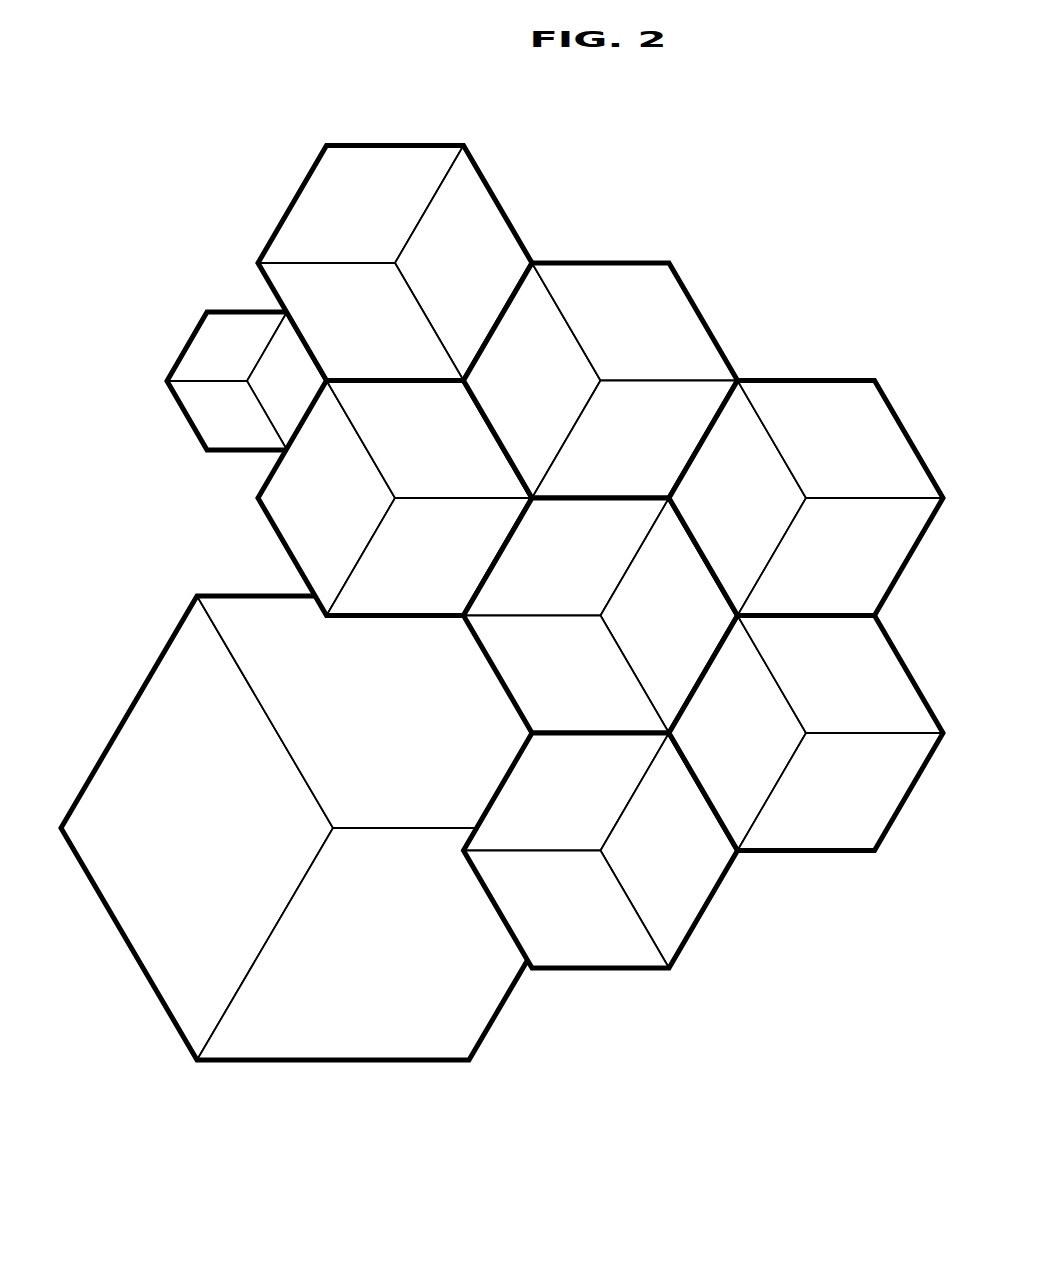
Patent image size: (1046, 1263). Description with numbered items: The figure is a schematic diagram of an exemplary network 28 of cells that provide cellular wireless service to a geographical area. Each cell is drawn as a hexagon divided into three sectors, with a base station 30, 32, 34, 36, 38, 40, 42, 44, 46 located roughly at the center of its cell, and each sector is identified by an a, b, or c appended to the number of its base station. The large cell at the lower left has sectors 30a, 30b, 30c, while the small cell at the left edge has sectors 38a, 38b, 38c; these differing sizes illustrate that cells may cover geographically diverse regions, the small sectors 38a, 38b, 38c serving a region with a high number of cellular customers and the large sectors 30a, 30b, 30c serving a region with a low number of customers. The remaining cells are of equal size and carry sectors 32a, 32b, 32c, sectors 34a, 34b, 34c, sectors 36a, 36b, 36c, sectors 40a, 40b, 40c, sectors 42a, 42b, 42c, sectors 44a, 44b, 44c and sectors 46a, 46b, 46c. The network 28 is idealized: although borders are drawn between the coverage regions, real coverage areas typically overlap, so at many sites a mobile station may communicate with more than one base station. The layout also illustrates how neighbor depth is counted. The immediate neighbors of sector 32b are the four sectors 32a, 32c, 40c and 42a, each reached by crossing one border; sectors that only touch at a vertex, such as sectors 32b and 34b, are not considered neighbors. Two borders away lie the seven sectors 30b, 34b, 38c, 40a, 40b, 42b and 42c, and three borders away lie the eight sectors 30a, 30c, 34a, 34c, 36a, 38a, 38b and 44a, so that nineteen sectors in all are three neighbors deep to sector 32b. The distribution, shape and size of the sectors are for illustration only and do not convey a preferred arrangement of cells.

The network 28 is at (772, 196).
The base station 30 is at (333, 828).
The sector 30a is at (193, 823).
The sector 30b is at (368, 725).
The sector 30c is at (390, 941).
The base station 32 is at (395, 498).
The sector 32a is at (314, 512).
The sector 32b is at (411, 455).
The sector 32c is at (374, 599).
The base station 34 is at (601, 615).
The sector 34a is at (547, 688).
The sector 34b is at (553, 561).
The sector 34c is at (646, 630).
The base station 36 is at (601, 850).
The sector 36a is at (547, 774).
The sector 36b is at (645, 863).
The sector 36c is at (548, 924).
The base station 38 is at (205, 381).
The sector 38a is at (215, 435).
The sector 38b is at (205, 365).
The sector 38c is at (266, 395).
The base station 40 is at (395, 263).
The sector 40a is at (333, 198).
The sector 40b is at (450, 278).
The sector 40c is at (334, 337).
The base station 42 is at (601, 380).
The sector 42a is at (509, 395).
The sector 42b is at (605, 336).
The sector 42c is at (569, 482).
The base station 44 is at (806, 498).
The sector 44a is at (723, 512).
The sector 44b is at (821, 453).
The sector 44c is at (792, 609).
The base station 46 is at (806, 733).
The sector 46a is at (820, 688).
The sector 46b is at (793, 822).
The sector 46c is at (725, 747).